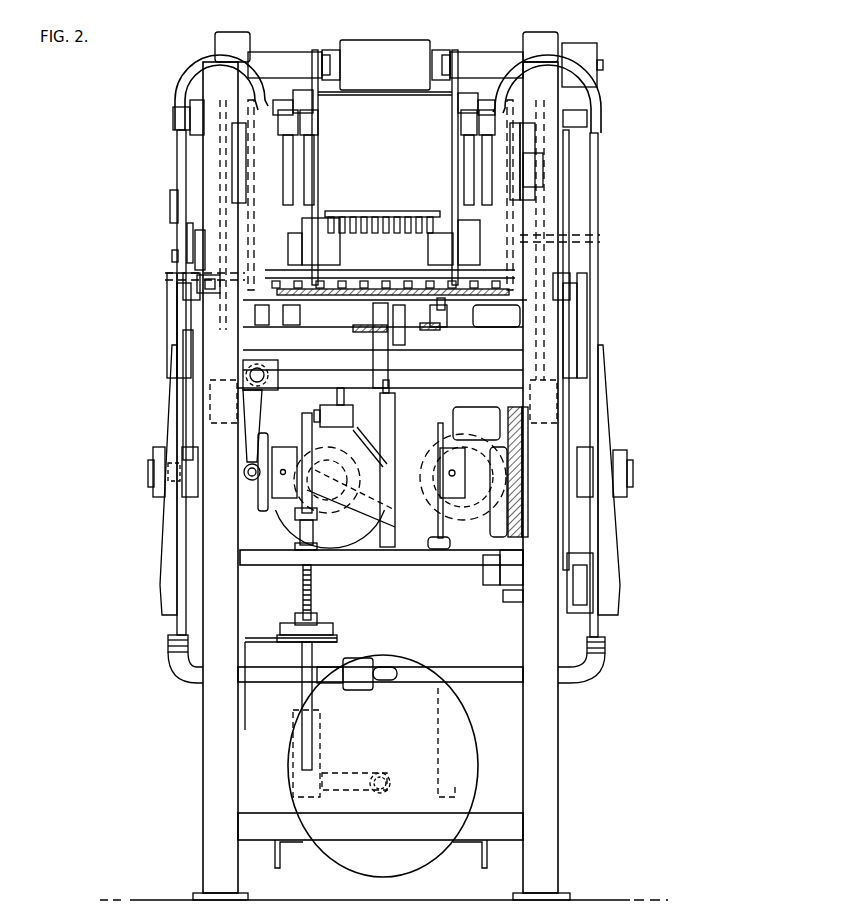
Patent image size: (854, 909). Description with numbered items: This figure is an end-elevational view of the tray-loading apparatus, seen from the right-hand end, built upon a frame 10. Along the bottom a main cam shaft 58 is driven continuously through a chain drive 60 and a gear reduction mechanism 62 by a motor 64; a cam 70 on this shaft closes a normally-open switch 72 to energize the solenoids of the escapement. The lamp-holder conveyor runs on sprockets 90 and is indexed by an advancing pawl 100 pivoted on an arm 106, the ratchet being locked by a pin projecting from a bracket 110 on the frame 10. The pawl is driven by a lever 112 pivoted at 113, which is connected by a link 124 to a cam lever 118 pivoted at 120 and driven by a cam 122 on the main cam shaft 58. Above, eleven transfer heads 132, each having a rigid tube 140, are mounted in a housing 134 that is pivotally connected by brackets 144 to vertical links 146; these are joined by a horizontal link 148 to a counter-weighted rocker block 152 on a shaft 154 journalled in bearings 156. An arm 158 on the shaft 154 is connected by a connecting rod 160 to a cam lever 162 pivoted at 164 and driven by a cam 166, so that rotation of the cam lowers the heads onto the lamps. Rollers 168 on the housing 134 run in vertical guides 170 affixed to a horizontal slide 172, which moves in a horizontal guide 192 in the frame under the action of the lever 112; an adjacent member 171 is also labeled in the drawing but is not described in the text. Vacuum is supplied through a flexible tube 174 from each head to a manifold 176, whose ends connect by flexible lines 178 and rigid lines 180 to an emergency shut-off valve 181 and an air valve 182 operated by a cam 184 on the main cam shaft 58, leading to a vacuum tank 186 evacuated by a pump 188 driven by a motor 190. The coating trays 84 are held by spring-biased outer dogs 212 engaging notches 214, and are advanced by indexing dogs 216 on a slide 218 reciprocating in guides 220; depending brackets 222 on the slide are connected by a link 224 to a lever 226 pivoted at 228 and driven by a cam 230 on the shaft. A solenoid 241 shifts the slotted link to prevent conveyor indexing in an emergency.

The frame 10 is at (198, 758).
The main cam shaft 58 is at (150, 471).
The chain drive 60 is at (520, 517).
The gear reduction mechanism 62 is at (465, 420).
The motor 64 is at (338, 552).
The cam 70 is at (412, 460).
The normally-open switch 72 is at (440, 550).
The coating tray 84 is at (472, 303).
The sprocket 90 is at (187, 236).
The advancing pawl 100 is at (172, 258).
The arm 106 is at (200, 248).
The bracket 110 is at (175, 197).
The lever 112 is at (177, 320).
The pivot 113 is at (185, 395).
The cam lever 118 is at (187, 336).
The pivot 120 is at (175, 380).
The cam 122 is at (168, 556).
The link 124 is at (200, 285).
The transfer head 132 is at (446, 293).
The housing 134 is at (378, 212).
The rigid tube 140 is at (340, 211).
The bracket 144 is at (428, 255).
The vertical link 146 is at (318, 132).
The horizontal link 148 is at (331, 50).
The rocker block 152 is at (385, 42).
The shaft 154 is at (279, 58).
The bearing 156 is at (237, 32).
The arm 158 is at (590, 58).
The connecting rod 160 is at (572, 196).
The cam lever 162 is at (593, 575).
The pivot 164 is at (500, 580).
The cam 166 is at (610, 533).
The roller 168 is at (168, 276).
The vertical guide 170 is at (245, 118).
The rod 171 is at (253, 230).
The horizontal slide 172 is at (245, 165).
The flexible tube 174 is at (288, 177).
The manifold 176 is at (318, 112).
The flexible line 178 is at (182, 92).
The rigid line 180 is at (177, 305).
The emergency shut-off valve 181 is at (360, 658).
The air valve 182 is at (262, 325).
The cam 184 is at (302, 430).
The vacuum tank 186 is at (473, 770).
The pump 188 is at (420, 660).
The motor 190 is at (215, 160).
The horizontal guide 192 is at (543, 184).
The outer dog 212 is at (318, 320).
The notch 214 is at (352, 327).
The indexing dog 216 is at (390, 345).
The slide 218 is at (405, 335).
The guide 220 is at (348, 340).
The depending bracket 222 is at (395, 380).
The link 224 is at (415, 402).
The lever 226 is at (365, 442).
The pivot 228 is at (333, 405).
The cam 230 is at (400, 565).
The solenoid 241 is at (200, 106).